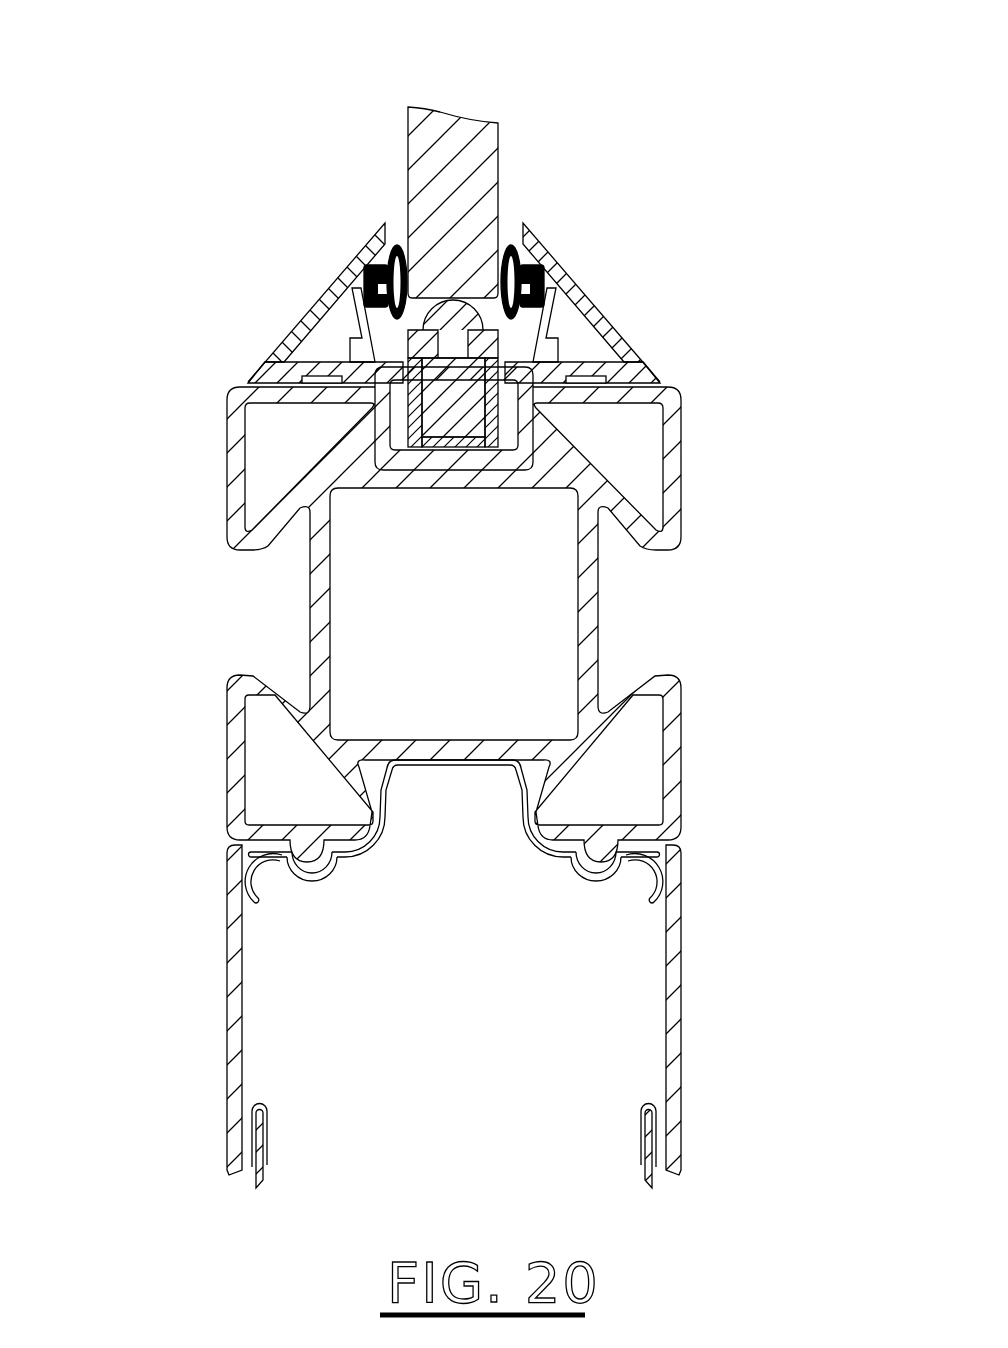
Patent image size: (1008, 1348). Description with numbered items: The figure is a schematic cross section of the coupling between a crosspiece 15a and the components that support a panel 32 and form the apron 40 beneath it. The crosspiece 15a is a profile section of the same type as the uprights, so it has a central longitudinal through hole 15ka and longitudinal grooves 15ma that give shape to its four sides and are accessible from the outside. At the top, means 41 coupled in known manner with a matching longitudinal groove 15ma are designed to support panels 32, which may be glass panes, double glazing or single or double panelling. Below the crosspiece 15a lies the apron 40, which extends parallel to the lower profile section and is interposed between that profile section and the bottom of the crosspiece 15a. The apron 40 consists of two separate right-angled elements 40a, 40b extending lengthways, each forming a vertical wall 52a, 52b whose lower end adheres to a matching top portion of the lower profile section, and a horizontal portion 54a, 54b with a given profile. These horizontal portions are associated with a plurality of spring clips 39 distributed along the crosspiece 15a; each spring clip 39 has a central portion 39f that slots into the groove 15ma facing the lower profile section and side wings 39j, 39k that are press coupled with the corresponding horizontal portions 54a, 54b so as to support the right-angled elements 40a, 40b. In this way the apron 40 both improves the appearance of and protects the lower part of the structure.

The panel 32 is at (468, 135).
The means for supporting panels 41 is at (628, 282).
The crosspiece 15a is at (203, 460).
The longitudinal groove 15ma is at (504, 674).
The longitudinal through hole 15ka is at (512, 633).
The horizontal portion 54b is at (283, 847).
The horizontal portion 54a is at (625, 847).
The spring clip 39 is at (462, 918).
The central portion 39f is at (480, 767).
The side wing 39k is at (308, 882).
The side wing 39j is at (606, 882).
The right-angled element 40a is at (708, 896).
The right-angled element 40b is at (207, 980).
The apron 40 is at (504, 674).
The vertical wall 52a is at (683, 1058).
The vertical wall 52b is at (236, 1077).